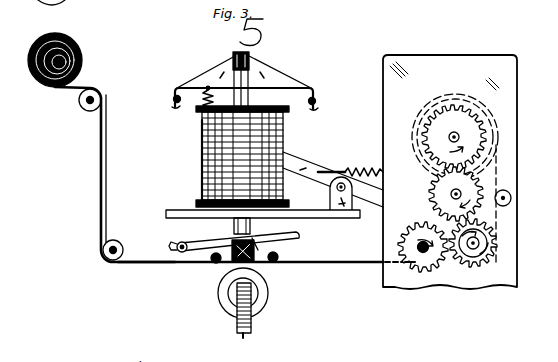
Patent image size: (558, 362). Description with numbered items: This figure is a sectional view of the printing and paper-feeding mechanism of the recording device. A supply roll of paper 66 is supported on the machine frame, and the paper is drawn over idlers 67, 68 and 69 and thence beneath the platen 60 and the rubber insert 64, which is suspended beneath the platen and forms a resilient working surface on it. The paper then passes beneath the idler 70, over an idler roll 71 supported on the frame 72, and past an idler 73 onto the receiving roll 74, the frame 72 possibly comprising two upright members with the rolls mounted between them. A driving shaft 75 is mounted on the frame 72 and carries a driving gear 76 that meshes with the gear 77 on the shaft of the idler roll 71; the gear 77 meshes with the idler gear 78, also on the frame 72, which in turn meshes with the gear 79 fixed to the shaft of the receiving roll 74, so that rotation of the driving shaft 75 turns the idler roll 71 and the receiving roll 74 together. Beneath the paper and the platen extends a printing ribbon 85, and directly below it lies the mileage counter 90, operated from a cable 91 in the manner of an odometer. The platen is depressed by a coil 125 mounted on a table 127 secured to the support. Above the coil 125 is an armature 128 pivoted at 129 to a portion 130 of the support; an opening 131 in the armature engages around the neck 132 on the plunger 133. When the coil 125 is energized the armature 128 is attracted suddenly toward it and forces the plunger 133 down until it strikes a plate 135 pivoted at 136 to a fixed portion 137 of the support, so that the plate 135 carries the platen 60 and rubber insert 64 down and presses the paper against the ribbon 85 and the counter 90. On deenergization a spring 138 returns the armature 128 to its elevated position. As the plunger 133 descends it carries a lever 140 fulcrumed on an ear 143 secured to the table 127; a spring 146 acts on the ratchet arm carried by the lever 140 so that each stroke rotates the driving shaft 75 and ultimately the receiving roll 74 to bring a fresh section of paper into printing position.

The platen 60 is at (234, 246).
The rubber insert 64 is at (257, 250).
The supply roll of paper 66 is at (83, 56).
The idler 67 is at (87, 113).
The idler 68 is at (118, 243).
The idler 69 is at (213, 264).
The idler 70 is at (281, 268).
The idler roll 71 is at (489, 243).
The frame 72 is at (514, 75).
The idler 73 is at (512, 204).
The receiving roll 74 is at (492, 123).
The driving shaft 75 is at (424, 252).
The driving gear 76 is at (413, 263).
The gear 77 is at (480, 270).
The idler gear 78 is at (437, 195).
The gear 79 is at (456, 117).
The printing ribbon 85 is at (228, 265).
The mileage counter 90 is at (219, 302).
The cable 91 is at (250, 337).
The coil 125 is at (284, 143).
The table 127 is at (185, 197).
The armature 128 is at (283, 83).
The pivot 129 is at (174, 97).
The portion of the support 130 is at (176, 104).
The opening 131 is at (252, 71).
The neck 132 is at (250, 54).
The plunger 133 is at (214, 128).
The plate 135 is at (300, 236).
The pivot 136 is at (175, 262).
The fixed portion of the support 137 is at (172, 244).
The spring 138 is at (203, 108).
The lever 140 is at (292, 168).
The ear 143 is at (330, 195).
The spring 146 is at (349, 168).